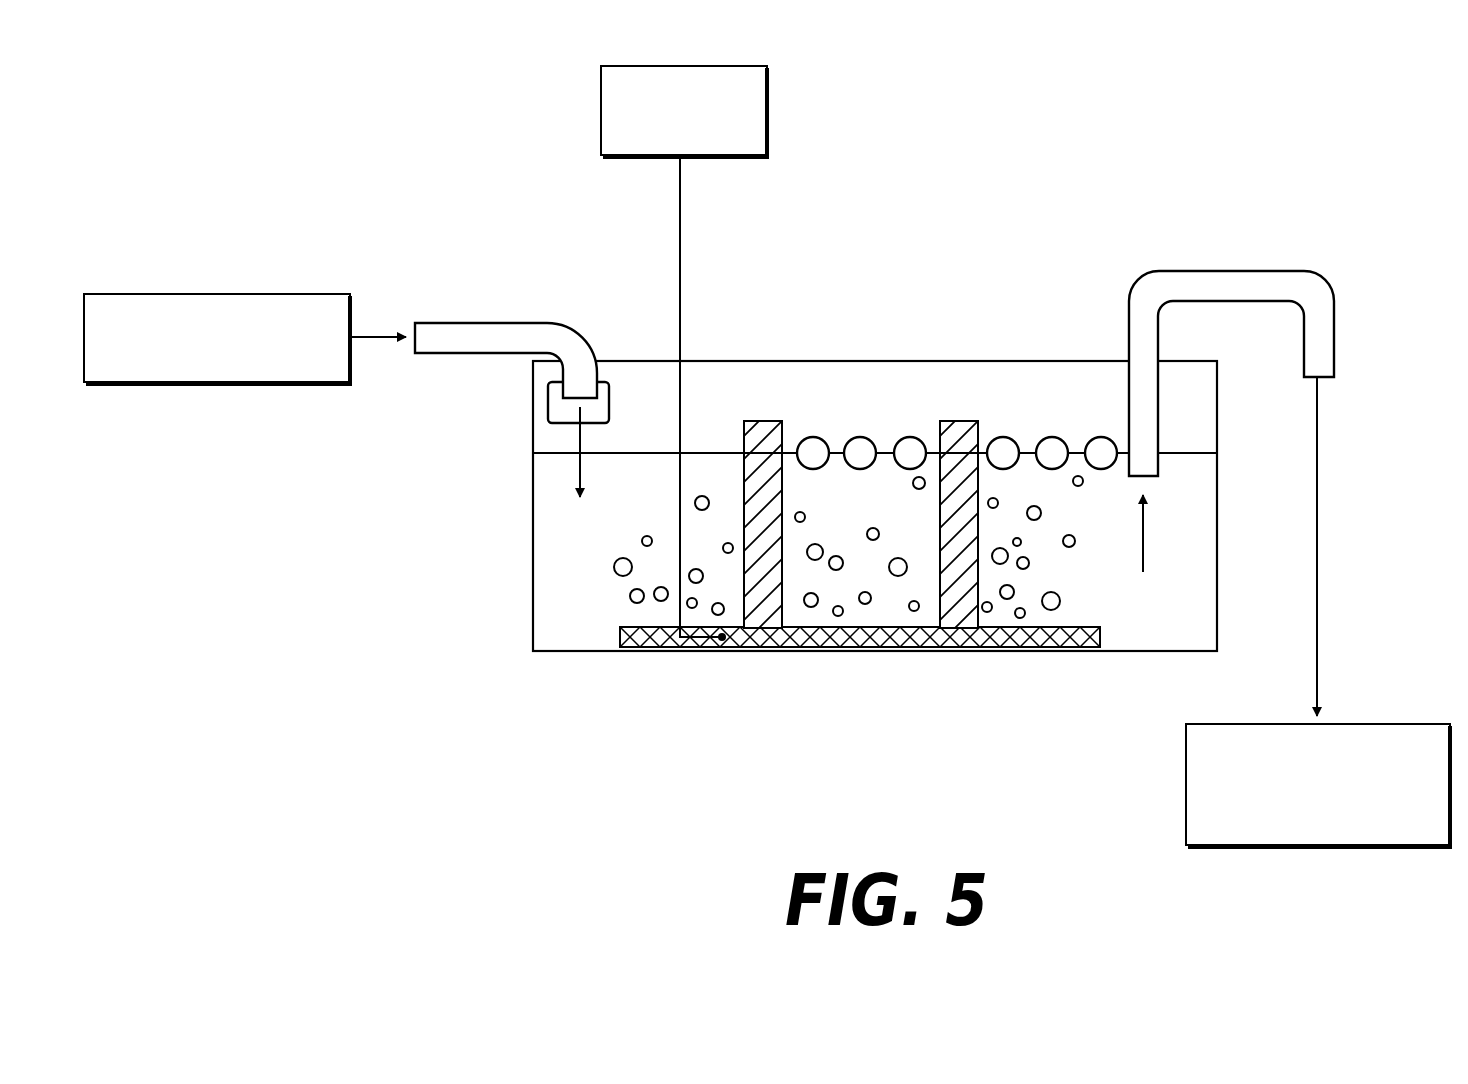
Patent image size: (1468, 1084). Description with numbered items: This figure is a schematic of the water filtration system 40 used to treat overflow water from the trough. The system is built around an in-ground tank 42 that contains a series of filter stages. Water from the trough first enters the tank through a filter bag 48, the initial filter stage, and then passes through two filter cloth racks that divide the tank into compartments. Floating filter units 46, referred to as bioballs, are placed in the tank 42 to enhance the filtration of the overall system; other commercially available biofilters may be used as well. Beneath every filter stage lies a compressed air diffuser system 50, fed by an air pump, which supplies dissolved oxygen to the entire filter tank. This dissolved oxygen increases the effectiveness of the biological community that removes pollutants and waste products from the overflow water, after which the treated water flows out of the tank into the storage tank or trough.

The water filtration system 40 is at (767, 456).
The in-ground tank 42 is at (997, 392).
The floating filter units 46 is at (859, 445).
The filter bag 48 is at (610, 393).
The compressed air diffuser system 50 is at (660, 640).